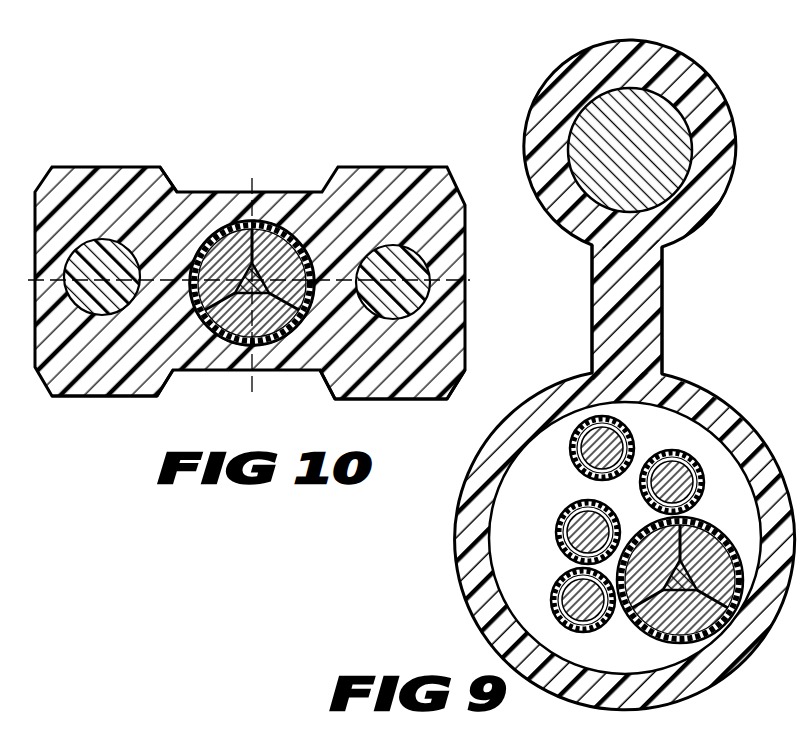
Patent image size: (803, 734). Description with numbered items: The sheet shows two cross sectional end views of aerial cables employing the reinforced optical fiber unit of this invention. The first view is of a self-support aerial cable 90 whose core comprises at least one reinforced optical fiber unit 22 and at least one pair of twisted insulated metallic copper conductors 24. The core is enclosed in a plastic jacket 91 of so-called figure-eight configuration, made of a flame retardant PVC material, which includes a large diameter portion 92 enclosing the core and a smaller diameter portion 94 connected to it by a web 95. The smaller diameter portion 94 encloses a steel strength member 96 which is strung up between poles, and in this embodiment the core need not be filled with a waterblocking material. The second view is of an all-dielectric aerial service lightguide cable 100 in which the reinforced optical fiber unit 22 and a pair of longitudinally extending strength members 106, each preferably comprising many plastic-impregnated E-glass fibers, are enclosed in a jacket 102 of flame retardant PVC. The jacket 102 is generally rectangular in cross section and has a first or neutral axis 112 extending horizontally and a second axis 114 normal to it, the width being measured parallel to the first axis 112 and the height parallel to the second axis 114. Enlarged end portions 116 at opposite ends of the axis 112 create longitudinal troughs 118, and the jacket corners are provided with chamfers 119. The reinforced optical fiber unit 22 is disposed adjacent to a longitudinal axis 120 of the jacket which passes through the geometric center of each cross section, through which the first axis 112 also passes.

In FIG. 10, the aerial service lightguide cable 100 is at (313, 148).
In FIG. 10, the jacket 102 is at (436, 178).
In FIG. 10, the strength member 106 is at (97, 243).
In FIG. 10, the first or neutral axis 112 is at (468, 283).
In FIG. 10, the second axis 114 is at (258, 182).
In FIG. 10, the enlarged end portion 116 is at (82, 392).
In FIG. 10, the trough 118 is at (175, 180).
In FIG. 10, the chamfer 119 is at (462, 385).
In FIG. 10, the longitudinal axis 120 is at (284, 230).
In FIG. 10, the reinforced optical fiber unit 22 is at (213, 228).
In FIG. 9, the reinforced optical fiber unit 22 is at (712, 527).
In FIG. 9, the aerial cable 90 is at (712, 338).
In FIG. 9, the plastic jacket 91 is at (664, 329).
In FIG. 9, the large diameter portion 92 is at (734, 412).
In FIG. 9, the smaller diameter portion 94 is at (687, 102).
In FIG. 9, the web 95 is at (655, 286).
In FIG. 9, the steel strength member 96 is at (638, 100).
In FIG. 9, the insulated metallic copper conductor 24 is at (582, 503).